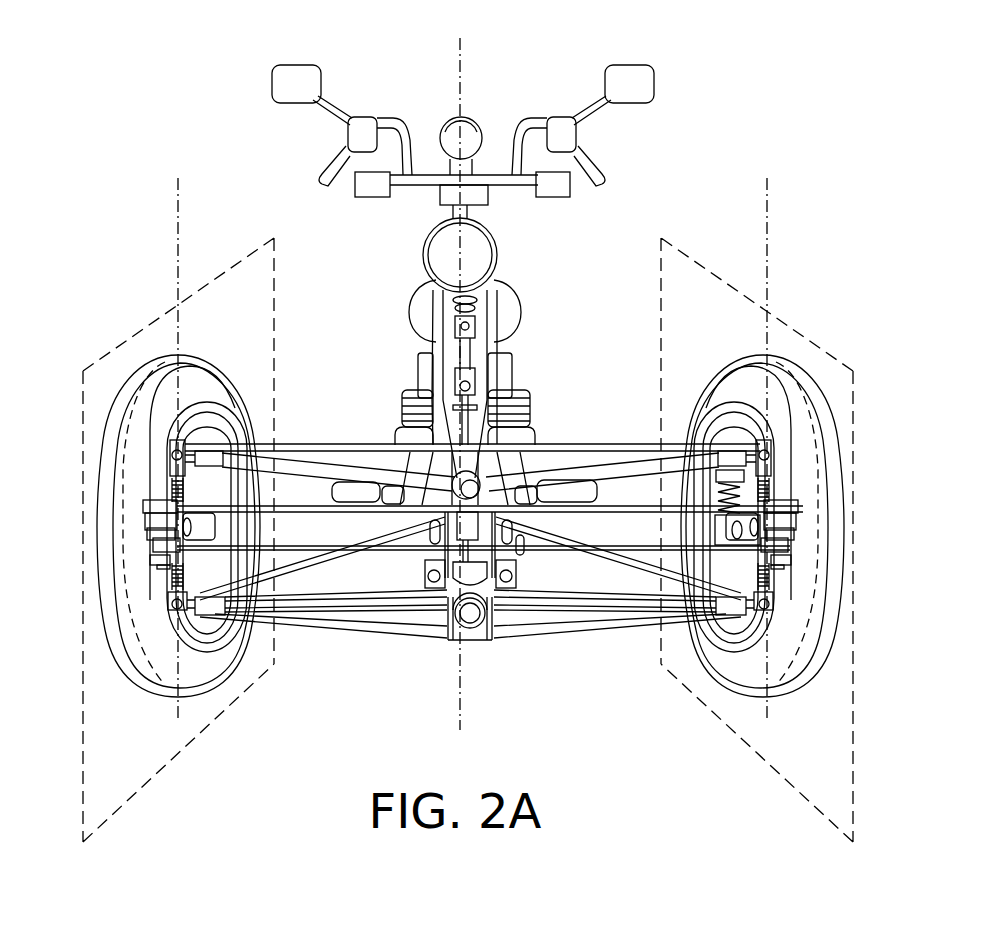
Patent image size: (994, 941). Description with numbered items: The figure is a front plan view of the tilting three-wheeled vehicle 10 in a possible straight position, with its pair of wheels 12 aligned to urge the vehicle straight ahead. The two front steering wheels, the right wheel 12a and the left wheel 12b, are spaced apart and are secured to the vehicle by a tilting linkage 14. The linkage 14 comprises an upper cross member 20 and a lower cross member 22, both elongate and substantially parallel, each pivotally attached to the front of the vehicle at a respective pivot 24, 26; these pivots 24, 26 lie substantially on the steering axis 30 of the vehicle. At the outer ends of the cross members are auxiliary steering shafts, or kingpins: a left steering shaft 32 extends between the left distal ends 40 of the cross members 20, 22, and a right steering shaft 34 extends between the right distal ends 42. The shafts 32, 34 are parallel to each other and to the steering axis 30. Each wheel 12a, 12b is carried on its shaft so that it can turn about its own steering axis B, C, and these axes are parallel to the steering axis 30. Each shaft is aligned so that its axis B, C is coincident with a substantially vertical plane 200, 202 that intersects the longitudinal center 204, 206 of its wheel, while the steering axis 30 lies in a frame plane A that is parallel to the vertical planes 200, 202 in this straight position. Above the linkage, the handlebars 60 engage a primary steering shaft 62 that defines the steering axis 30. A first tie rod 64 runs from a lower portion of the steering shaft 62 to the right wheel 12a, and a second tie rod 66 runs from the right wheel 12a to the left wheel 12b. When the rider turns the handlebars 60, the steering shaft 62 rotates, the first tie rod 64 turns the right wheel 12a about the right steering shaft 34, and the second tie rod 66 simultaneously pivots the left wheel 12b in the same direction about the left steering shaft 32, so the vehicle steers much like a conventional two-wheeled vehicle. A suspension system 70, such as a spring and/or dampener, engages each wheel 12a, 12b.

The frame plane A is at (460, 58).
The steering axis of wheel B is at (767, 188).
The steering axis of wheel C is at (178, 188).
The tilting three-wheeled vehicle 10 is at (640, 254).
The pair of wheels 12 is at (791, 526).
The right wheel 12a is at (92, 527).
The left wheel 12b is at (835, 492).
The tilting linkage 14 is at (358, 422).
The upper cross member 20 is at (596, 443).
The lower cross member 22 is at (388, 640).
The pivot 24 is at (474, 484).
The pivot 26 is at (472, 615).
The steering axis 30 is at (470, 105).
The left steering shaft 32 is at (772, 577).
The right steering shaft 34 is at (170, 572).
The left distal ends 40 is at (770, 455).
The right distal ends 42 is at (172, 455).
The handlebars 60 is at (596, 168).
The primary steering shaft 62 is at (468, 347).
The first tie rod 64 is at (391, 550).
The second tie rod 66 is at (310, 506).
The suspension system 70 is at (185, 575).
The vertical plane 200 is at (163, 770).
The vertical plane 202 is at (778, 770).
The longitudinal center of wheel 204 is at (145, 388).
The longitudinal center of wheel 206 is at (812, 390).